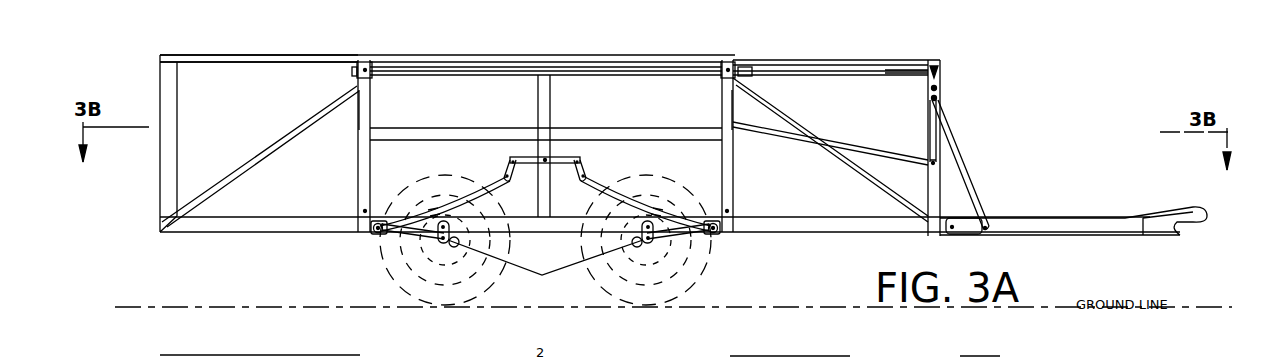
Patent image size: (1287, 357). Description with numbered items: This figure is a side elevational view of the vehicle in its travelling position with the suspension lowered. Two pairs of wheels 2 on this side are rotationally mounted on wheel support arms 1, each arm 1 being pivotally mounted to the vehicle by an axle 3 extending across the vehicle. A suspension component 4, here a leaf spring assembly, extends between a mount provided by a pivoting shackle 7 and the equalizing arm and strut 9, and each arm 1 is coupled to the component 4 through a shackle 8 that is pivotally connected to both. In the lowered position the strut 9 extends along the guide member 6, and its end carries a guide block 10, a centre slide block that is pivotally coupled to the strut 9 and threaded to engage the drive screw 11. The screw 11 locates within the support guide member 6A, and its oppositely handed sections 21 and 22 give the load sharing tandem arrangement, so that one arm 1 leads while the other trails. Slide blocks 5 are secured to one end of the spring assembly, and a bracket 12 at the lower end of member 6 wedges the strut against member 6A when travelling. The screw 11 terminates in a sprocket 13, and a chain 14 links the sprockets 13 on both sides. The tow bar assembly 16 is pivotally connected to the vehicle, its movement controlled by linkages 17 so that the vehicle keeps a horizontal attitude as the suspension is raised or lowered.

The wheel support arm 1 is at (396, 240).
The wheels 2 is at (545, 268).
The axle 3 is at (370, 232).
The suspension component 4 is at (480, 197).
The slide blocks 5 is at (363, 210).
The guide member 6 is at (357, 164).
The support guide member 6A is at (497, 76).
The pivoting shackle 7 is at (582, 166).
The shackle 8 is at (432, 243).
The strut 9 is at (371, 100).
The guide block 10 is at (366, 64).
The drive screw 11 is at (622, 73).
The bracket 12 is at (371, 229).
The sprocket 13 is at (940, 63).
The chain 14 is at (933, 64).
The tow bar assembly 16 is at (1103, 217).
The linkages 17 is at (833, 140).
The screw section 21 is at (446, 65).
The screw section 22 is at (638, 66).